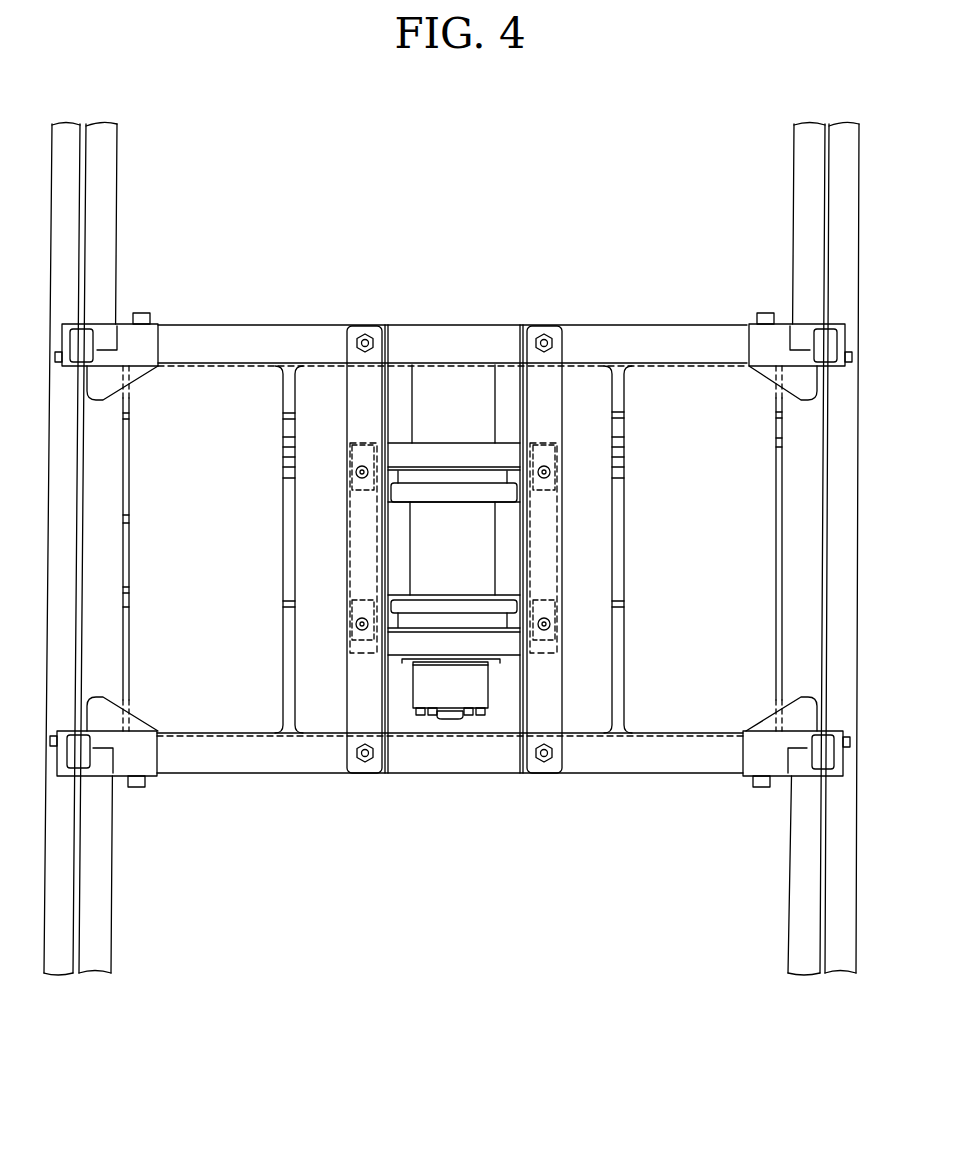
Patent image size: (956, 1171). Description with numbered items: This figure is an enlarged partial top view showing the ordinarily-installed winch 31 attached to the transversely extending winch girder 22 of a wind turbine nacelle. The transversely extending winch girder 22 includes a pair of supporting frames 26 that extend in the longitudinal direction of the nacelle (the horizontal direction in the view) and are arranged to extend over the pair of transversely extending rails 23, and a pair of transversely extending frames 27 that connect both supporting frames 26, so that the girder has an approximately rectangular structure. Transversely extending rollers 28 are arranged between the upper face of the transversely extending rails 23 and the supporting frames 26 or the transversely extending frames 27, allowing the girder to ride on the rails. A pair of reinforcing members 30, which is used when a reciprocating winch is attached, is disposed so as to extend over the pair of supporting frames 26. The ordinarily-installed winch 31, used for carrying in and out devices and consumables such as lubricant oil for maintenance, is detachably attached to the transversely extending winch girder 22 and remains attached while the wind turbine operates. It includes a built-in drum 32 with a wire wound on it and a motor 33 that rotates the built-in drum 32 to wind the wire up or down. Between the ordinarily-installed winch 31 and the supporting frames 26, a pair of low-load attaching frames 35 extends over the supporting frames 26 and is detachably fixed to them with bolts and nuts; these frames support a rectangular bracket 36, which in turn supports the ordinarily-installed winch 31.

The transversely extending winch girder 22 is at (274, 306).
The transversely extending rail 23 is at (105, 161).
The supporting frame 26 is at (653, 330).
The transversely extending frame 27 is at (110, 556).
The transversely extending roller 28 is at (83, 338).
The reinforcing member 30 is at (286, 666).
The ordinarily-installed winch 31 is at (452, 742).
The built-in drum 32 is at (487, 545).
The motor 33 is at (482, 688).
The low-load attaching frame 35 is at (352, 398).
The bracket 36 is at (448, 452).